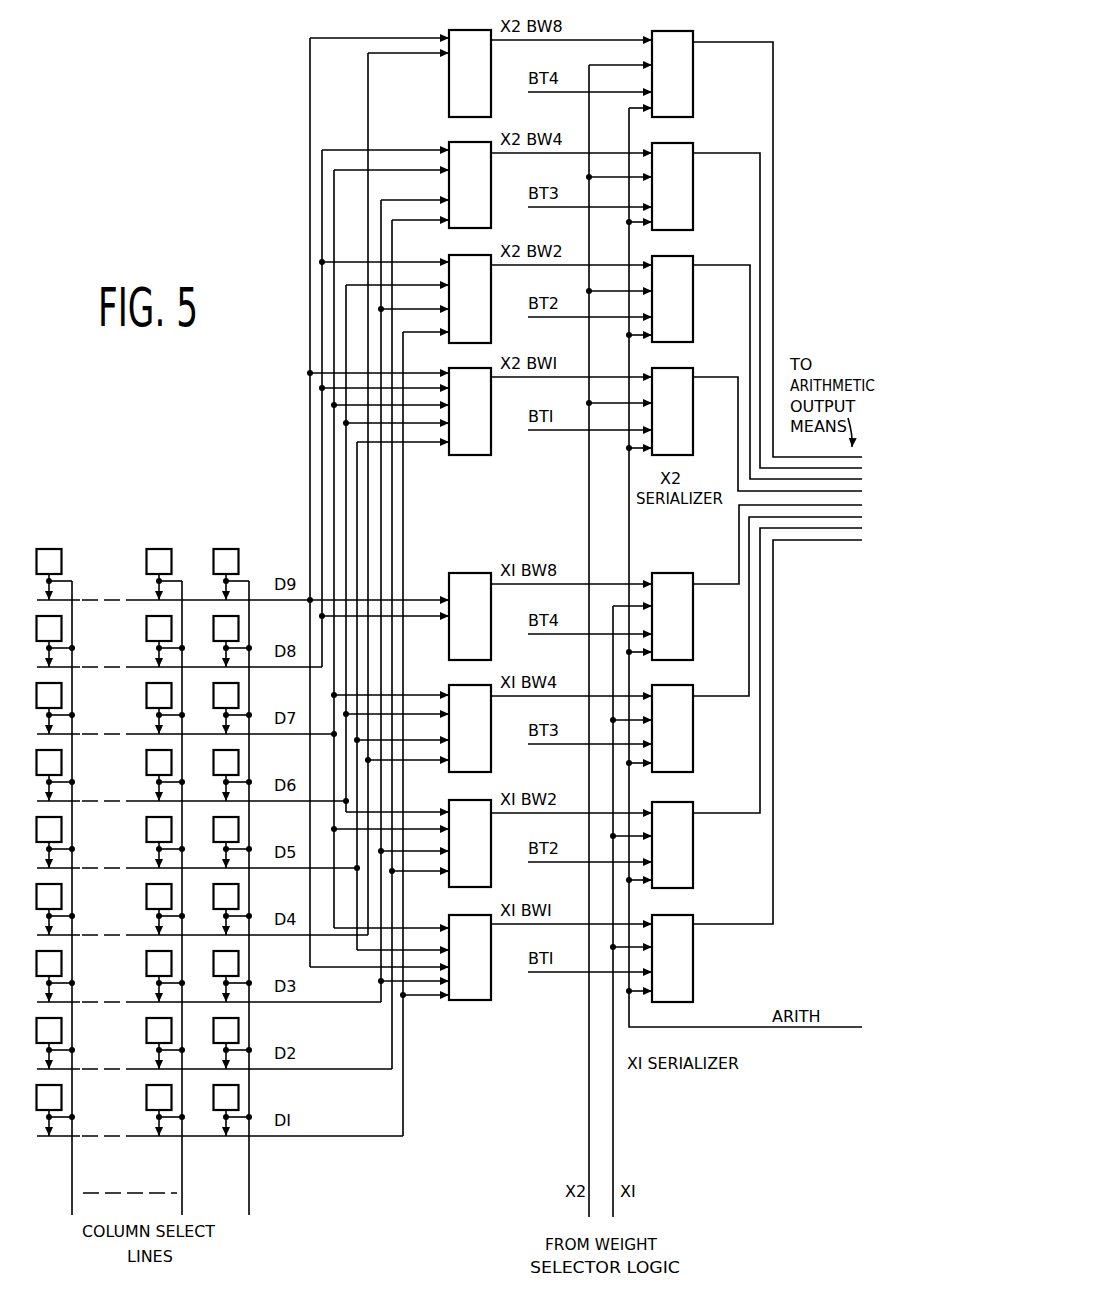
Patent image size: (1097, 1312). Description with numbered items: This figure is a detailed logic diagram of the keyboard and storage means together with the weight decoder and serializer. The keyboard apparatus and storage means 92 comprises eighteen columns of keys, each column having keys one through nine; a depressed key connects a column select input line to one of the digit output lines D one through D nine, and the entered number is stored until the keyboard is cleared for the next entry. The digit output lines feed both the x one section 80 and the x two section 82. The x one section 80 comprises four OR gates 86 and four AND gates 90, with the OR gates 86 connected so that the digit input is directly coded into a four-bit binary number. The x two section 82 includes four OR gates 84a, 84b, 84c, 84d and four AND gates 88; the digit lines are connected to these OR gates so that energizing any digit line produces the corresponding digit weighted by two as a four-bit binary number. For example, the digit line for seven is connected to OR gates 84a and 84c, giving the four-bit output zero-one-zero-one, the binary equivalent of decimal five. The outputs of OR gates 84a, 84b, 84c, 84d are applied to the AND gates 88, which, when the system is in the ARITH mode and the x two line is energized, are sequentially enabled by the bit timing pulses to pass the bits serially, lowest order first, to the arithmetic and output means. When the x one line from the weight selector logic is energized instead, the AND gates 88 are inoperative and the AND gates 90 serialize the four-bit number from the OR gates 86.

The x1 section 80 is at (356, 812).
The x2 section 82 is at (436, 257).
The OR gate 84a is at (490, 368).
The OR gate 84b is at (490, 255).
The OR gate 84c is at (490, 142).
The OR gate 84d is at (490, 30).
The OR gates 86 is at (490, 573).
The AND gates 88 is at (687, 118).
The AND gates 90 is at (688, 660).
The keyboard apparatus and storage means 92 is at (112, 548).